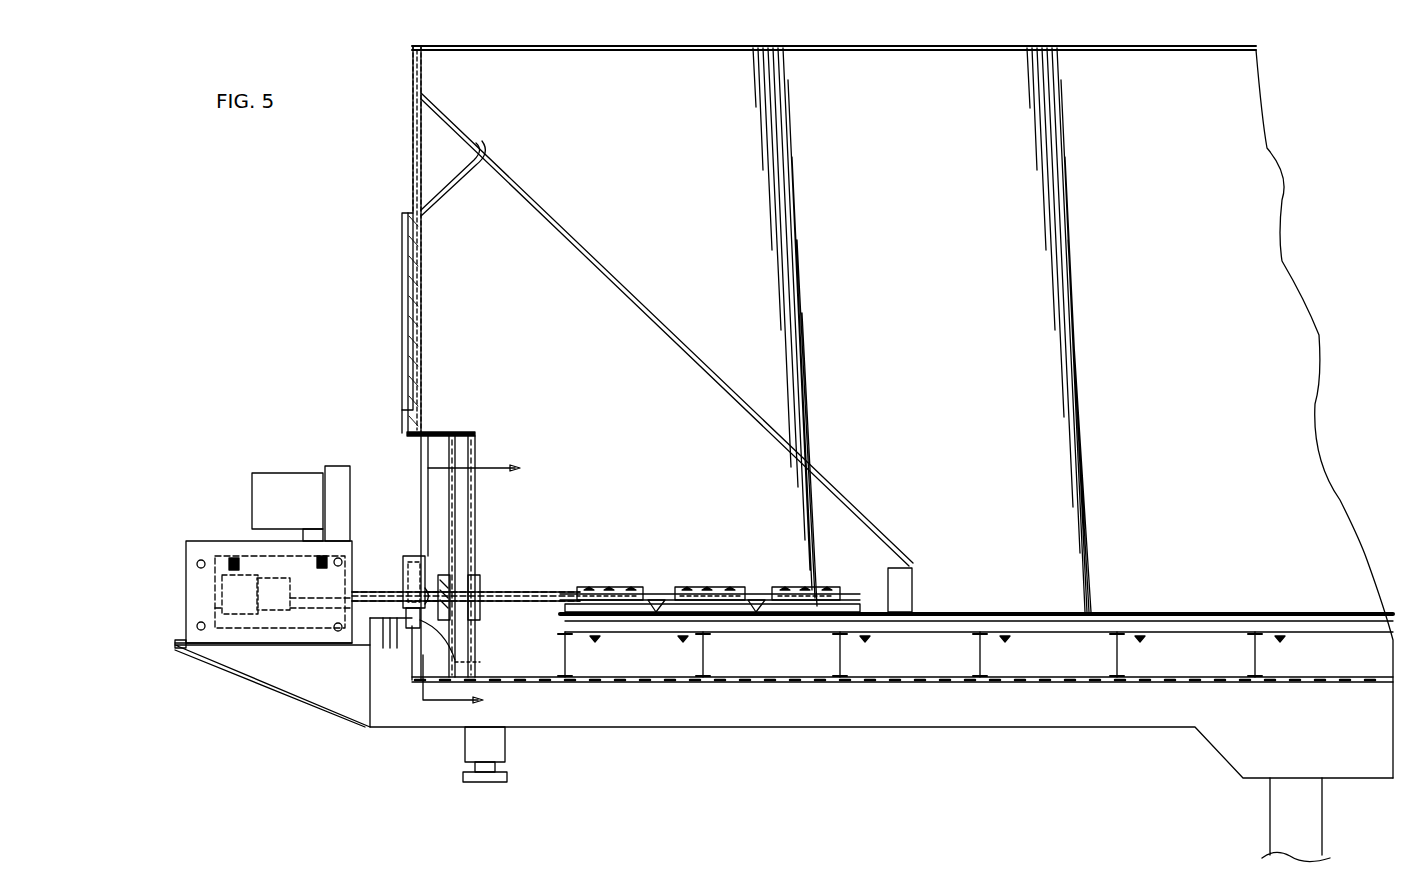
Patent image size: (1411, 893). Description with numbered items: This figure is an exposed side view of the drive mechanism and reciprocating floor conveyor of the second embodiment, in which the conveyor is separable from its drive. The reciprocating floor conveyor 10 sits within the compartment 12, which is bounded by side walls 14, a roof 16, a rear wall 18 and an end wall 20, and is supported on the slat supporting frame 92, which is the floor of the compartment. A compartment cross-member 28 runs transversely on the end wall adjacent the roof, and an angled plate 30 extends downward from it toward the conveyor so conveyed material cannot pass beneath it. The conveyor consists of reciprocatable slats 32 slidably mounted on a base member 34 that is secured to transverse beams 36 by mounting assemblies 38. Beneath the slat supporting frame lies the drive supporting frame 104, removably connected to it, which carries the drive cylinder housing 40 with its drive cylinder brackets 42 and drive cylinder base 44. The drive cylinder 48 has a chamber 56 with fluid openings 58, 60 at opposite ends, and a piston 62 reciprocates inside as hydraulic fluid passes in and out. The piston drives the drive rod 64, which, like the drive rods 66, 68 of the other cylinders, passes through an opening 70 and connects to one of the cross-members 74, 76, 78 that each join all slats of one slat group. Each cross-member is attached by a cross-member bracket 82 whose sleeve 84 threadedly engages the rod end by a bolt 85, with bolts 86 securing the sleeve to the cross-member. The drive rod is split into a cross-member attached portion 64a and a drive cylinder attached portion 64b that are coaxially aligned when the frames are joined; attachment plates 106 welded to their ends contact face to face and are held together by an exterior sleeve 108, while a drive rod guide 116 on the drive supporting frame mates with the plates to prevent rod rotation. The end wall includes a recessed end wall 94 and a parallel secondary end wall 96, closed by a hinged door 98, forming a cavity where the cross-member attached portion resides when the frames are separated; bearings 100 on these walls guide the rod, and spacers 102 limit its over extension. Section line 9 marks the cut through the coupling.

The section line 9- 9 is at (479, 585).
The reciprocating floor conveyor 10 is at (1174, 603).
The compartment 12 is at (1148, 486).
The side walls 14 is at (1270, 190).
The roof 16 is at (1262, 47).
The rear wall 18 is at (1282, 250).
The front wall 20 is at (410, 148).
The compartment cross-member 28 is at (452, 178).
The angled plate 30 is at (824, 484).
The slats 32 is at (1098, 612).
The base member 34 is at (1140, 632).
The transverse beams 36 is at (567, 655).
The mounting assemblies 38 is at (1008, 642).
The drive cylinder housing 40 is at (155, 568).
The drive cylinder brackets 42 is at (186, 630).
The drive cylinder base 44 is at (176, 650).
The drive cylinder 48 is at (222, 598).
The chamber 56 is at (258, 612).
The fluid opening 58 is at (233, 558).
The fluid opening 60 is at (317, 560).
The piston 62 is at (302, 610).
The drive rod 64 is at (578, 587).
The cross-member attached portion 64a is at (505, 603).
The drive cylinder attached portion 64b is at (400, 588).
The drive rod 66 is at (672, 590).
The drive rod 68 is at (758, 590).
The opening 70 is at (480, 596).
The cross-member 74 is at (636, 604).
The cross-member 76 is at (722, 604).
The cross-member 78 is at (818, 604).
The cross-member bracket 82 is at (800, 575).
The sleeve 84 is at (805, 587).
The bolt 85 is at (640, 587).
The bolts 86 is at (690, 588).
The slat supporting frame 92 is at (650, 685).
The recessed end wall 94 is at (476, 450).
The secondary end wall 96 is at (428, 452).
The hinged door 98 is at (408, 420).
The bearings 100 is at (480, 585).
The spacers 102 is at (440, 575).
The drive supporting frame 104 is at (725, 727).
The attachment plate 106 is at (469, 647).
The exterior sleeve 108 is at (410, 556).
The drive rod guide 116 is at (395, 655).